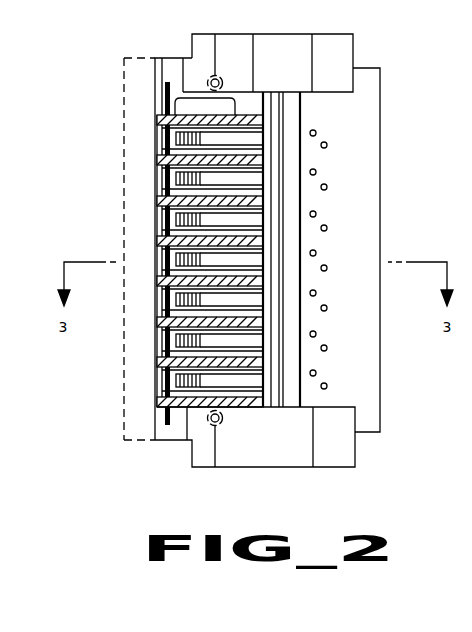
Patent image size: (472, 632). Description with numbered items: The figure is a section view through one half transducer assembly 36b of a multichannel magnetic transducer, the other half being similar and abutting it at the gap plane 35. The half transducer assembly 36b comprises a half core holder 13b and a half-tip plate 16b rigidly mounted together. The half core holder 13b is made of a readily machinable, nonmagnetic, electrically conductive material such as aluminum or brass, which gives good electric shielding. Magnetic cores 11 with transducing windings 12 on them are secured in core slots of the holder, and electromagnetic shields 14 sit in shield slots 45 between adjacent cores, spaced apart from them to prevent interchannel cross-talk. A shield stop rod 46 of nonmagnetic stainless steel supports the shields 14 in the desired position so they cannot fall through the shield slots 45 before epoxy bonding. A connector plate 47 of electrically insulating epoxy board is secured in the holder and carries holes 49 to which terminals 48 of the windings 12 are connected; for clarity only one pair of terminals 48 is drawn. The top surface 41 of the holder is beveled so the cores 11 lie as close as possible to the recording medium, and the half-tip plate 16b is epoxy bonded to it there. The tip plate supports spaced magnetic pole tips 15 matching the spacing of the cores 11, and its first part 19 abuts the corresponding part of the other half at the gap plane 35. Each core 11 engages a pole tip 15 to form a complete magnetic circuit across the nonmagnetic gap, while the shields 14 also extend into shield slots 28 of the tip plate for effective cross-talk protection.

The magnetic core 11 is at (252, 140).
The transducing winding 12 is at (158, 302).
The half core holder 13b is at (268, 71).
The electromagnetic shield 14 is at (160, 321).
The magnetic pole tip 15 is at (160, 222).
The half-tip plate 16b is at (160, 78).
The first part 19 is at (160, 62).
The shield slot 28 is at (157, 160).
The gap plane 35 is at (175, 440).
The half transducer assembly 36b is at (143, 45).
The top surface 41 is at (165, 95).
The shield slot 45 is at (252, 158).
The shield stop rod 46 is at (267, 200).
The connector plate 47 is at (376, 117).
The terminal 48 is at (250, 312).
The hole 49 is at (316, 372).